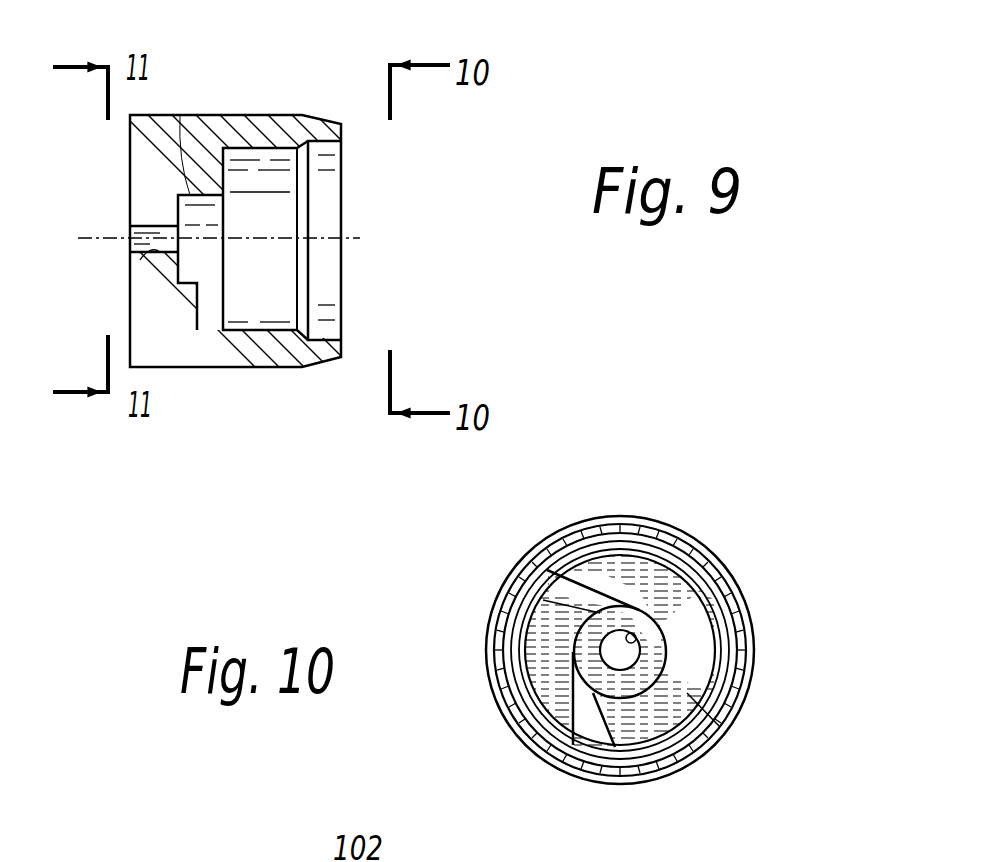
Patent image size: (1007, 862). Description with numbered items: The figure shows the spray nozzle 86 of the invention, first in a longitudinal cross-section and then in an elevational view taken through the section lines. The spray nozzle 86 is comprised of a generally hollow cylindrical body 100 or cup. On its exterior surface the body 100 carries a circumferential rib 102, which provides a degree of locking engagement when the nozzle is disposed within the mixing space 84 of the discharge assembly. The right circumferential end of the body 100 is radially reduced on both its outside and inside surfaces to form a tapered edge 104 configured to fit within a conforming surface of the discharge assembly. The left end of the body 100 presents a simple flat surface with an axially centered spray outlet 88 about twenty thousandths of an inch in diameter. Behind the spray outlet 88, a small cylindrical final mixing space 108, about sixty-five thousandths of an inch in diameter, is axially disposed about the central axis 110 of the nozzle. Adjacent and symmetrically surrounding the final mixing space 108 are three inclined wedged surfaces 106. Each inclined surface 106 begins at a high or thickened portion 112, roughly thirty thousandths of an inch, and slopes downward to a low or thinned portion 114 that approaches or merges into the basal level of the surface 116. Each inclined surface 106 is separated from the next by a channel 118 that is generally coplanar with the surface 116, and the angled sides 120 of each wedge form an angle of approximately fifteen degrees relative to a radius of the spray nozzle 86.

In FIG. 9, the mixing space 84 is at (247, 240).
In FIG. 9, the spray nozzle 86 is at (100, 154).
In FIG. 10, the spray nozzle 86 is at (778, 506).
In FIG. 9, the spray outlet 88 is at (146, 256).
In FIG. 10, the spray outlet 88 is at (636, 640).
In FIG. 9, the body 100 is at (173, 368).
In FIG. 9, the circumferential rib 102 is at (198, 113).
In FIG. 10, the circumferential rib 102 is at (707, 547).
In FIG. 9, the tapered edge 104 is at (341, 138).
In FIG. 10, the tapered edge 104 is at (705, 582).
In FIG. 9, the inclined surfaces 106 is at (223, 178).
In FIG. 10, the inclined surfaces 106 is at (648, 567).
In FIG. 9, the final mixing space 108 is at (207, 263).
In FIG. 10, the final mixing space 108 is at (625, 702).
In FIG. 9, the central axis 110 is at (100, 243).
In FIG. 10, the thickened portion 112 is at (590, 570).
In FIG. 10, the thinned portion 114 is at (547, 610).
In FIG. 9, the basal surface 116 is at (187, 197).
In FIG. 10, the basal surface 116 is at (543, 547).
In FIG. 10, the channel 118 is at (598, 602).
In FIG. 10, the angled sides 120 is at (597, 700).